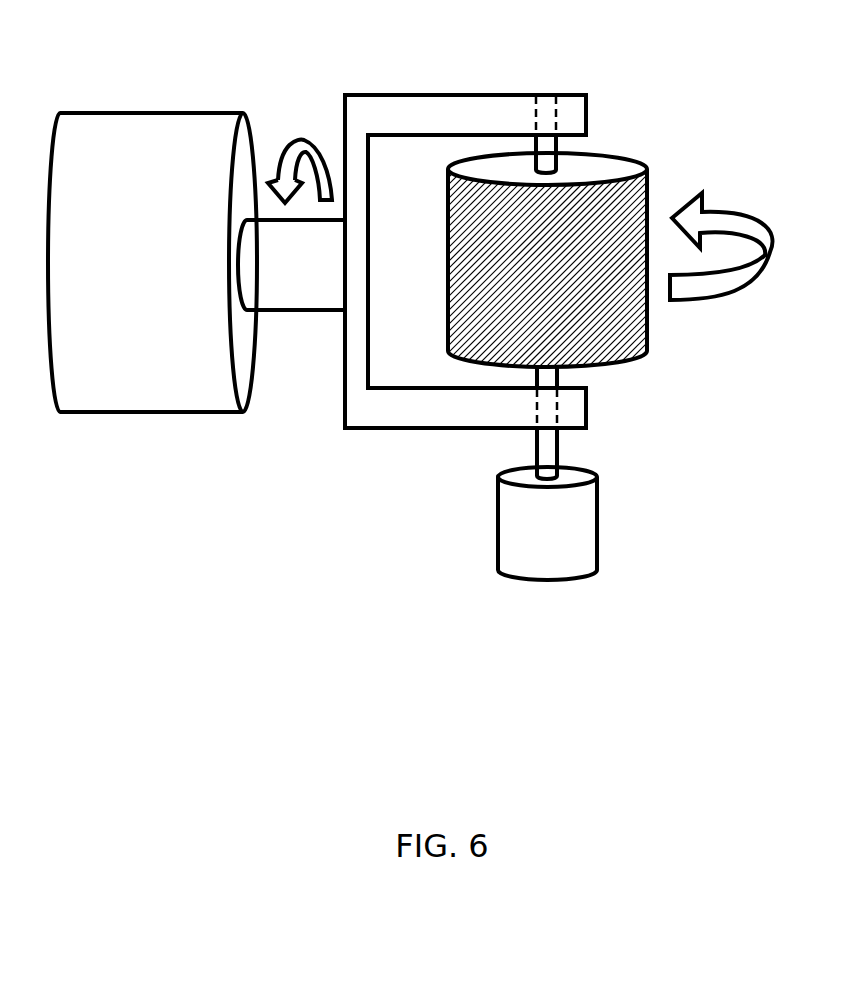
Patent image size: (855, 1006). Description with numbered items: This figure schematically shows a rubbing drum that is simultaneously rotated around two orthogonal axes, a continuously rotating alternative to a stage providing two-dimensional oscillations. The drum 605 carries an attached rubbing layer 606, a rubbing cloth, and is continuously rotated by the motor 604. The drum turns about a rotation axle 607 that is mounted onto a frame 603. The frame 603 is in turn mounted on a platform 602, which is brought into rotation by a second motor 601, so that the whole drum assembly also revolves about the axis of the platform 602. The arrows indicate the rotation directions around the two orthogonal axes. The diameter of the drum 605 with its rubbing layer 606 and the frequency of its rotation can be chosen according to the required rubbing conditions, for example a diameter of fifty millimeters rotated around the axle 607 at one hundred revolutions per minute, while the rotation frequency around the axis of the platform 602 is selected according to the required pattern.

The motor 601 is at (130, 375).
The platform 602 is at (312, 305).
The frame 603 is at (392, 107).
The motor 604 is at (565, 530).
The drum 605 is at (597, 165).
The rubbing layer 606 is at (600, 342).
The rotation axle 607 is at (552, 448).